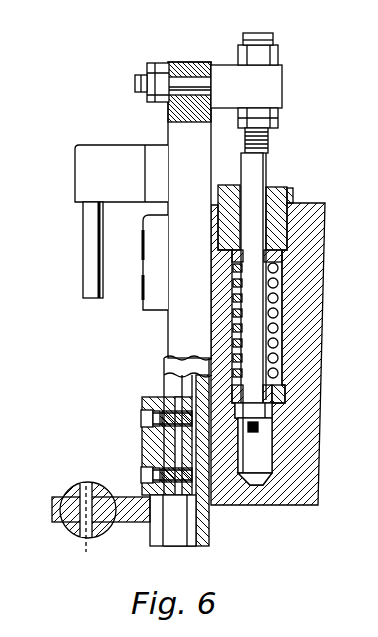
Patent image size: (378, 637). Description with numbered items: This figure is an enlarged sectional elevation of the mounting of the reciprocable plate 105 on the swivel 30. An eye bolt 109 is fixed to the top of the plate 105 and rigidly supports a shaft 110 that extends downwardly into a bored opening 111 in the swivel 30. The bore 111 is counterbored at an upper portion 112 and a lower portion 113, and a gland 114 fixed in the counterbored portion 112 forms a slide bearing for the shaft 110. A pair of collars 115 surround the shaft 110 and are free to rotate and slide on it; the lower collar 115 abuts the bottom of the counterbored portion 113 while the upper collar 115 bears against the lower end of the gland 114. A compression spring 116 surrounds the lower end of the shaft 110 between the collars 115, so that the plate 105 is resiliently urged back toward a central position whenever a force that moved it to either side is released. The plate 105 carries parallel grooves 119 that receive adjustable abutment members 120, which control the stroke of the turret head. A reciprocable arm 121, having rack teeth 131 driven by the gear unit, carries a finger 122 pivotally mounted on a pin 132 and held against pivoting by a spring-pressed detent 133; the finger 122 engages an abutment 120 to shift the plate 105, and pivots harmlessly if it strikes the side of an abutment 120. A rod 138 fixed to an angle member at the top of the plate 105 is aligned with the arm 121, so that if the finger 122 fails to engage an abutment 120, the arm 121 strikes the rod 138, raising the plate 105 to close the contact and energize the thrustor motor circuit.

The swivel 30 is at (318, 237).
The plate 105 is at (170, 147).
The eye bolt 109 is at (273, 102).
The shaft 110 is at (270, 163).
The bored opening 111 is at (275, 445).
The counterbored portion 112 is at (283, 261).
The counterbored portion 113 is at (284, 402).
The gland 114 is at (280, 188).
The collars 115 is at (272, 262).
The compression spring 116 is at (292, 329).
The grooves 119 is at (186, 523).
The abutment members 120 is at (148, 283).
The arm 121 is at (76, 488).
The finger portion 122 is at (55, 508).
The rack teeth 131 is at (98, 162).
The pin 132 is at (94, 537).
The spring-pressed detent 133 is at (80, 540).
The rod 138 is at (90, 255).